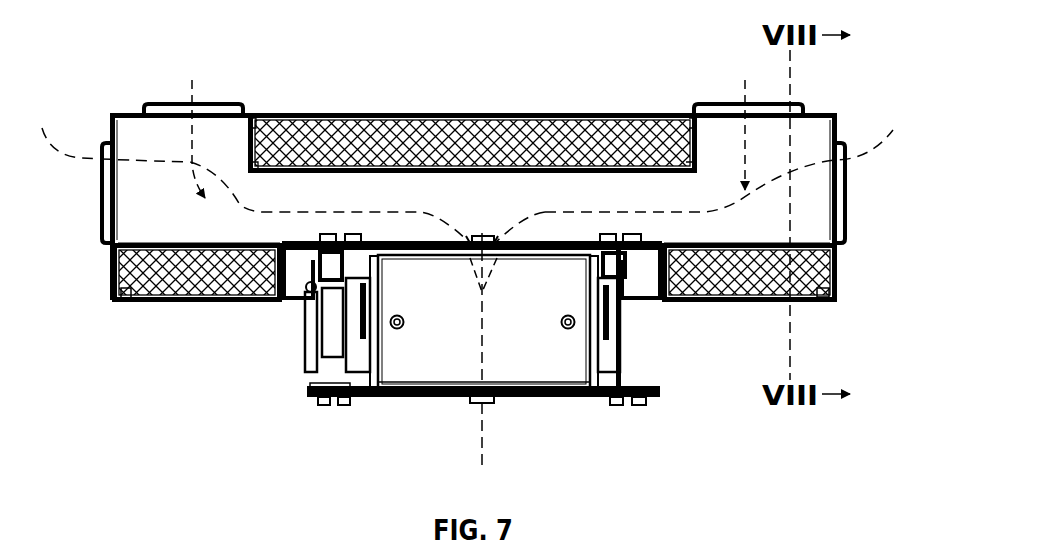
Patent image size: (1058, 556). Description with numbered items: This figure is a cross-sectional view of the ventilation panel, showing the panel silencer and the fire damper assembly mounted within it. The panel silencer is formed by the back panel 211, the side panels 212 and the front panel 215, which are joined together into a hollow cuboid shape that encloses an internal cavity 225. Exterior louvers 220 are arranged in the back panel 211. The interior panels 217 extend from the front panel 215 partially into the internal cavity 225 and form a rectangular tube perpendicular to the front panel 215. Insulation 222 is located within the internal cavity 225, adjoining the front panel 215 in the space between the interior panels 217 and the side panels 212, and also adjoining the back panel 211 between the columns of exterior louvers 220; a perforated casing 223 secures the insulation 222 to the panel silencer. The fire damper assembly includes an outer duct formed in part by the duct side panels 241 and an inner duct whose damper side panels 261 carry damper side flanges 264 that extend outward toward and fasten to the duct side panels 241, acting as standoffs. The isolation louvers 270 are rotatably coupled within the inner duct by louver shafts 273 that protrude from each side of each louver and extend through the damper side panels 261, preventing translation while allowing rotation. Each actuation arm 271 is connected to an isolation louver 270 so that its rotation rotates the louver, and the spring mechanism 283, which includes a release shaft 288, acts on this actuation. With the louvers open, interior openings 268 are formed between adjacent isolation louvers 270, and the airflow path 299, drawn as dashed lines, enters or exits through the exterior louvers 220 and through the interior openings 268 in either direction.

The back panel 211 is at (537, 113).
The side panels 212 is at (108, 255).
The front panel 215 is at (200, 302).
The interior panels 217 is at (265, 268).
The exterior louvers 220 is at (165, 100).
The insulation 222 is at (440, 128).
The perforated casing 223 is at (592, 165).
The internal cavity 225 is at (367, 192).
The duct side panels 241 is at (350, 356).
The damper side panels 261 is at (380, 360).
The damper side flanges 264 is at (374, 270).
The interior openings 268 is at (440, 397).
The isolation louvers 270 is at (525, 397).
The actuation arm 271 is at (355, 305).
The louver shaft 273 is at (403, 306).
The spring mechanism 283 is at (218, 375).
The release shaft 288 is at (322, 400).
The airflow path 299 is at (195, 85).